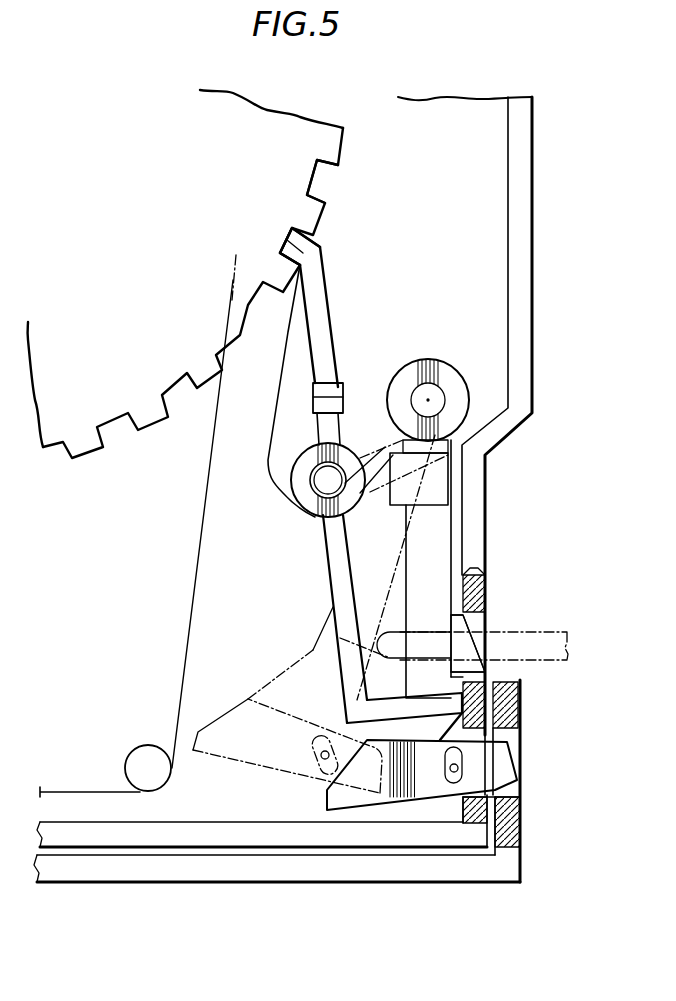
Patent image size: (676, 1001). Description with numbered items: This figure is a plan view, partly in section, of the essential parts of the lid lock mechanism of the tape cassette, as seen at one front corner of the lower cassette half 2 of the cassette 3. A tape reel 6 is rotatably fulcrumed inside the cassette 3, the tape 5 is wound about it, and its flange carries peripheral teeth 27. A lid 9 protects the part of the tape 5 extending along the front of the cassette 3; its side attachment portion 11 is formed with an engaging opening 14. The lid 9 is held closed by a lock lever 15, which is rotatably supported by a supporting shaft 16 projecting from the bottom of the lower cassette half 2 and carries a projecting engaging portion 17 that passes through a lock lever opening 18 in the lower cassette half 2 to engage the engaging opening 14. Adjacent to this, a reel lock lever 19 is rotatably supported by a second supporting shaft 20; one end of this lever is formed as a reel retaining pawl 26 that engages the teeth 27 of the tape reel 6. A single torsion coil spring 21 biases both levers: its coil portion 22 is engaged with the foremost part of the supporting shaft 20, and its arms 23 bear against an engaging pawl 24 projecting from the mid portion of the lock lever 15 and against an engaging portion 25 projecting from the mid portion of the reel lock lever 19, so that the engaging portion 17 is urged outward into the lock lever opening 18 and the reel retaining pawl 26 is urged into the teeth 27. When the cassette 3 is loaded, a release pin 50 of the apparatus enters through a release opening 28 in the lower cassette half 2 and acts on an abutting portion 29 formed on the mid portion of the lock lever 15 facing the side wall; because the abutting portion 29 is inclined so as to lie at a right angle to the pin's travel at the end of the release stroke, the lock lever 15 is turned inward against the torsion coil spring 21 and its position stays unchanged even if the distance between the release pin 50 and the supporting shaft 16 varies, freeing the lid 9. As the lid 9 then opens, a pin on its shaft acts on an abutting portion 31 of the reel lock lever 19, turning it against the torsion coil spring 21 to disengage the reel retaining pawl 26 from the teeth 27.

The lower cassette half 2 is at (352, 845).
The cassette 3 is at (527, 415).
The tape 5 is at (80, 793).
The tape reel 6 is at (240, 112).
The lid 9 is at (452, 870).
The attachment portion 11 is at (520, 842).
The engaging opening 14 is at (513, 795).
The lock lever 15 is at (445, 535).
The supporting shaft 16 is at (440, 390).
The engaging portion 17 is at (503, 755).
The lock lever opening 18 is at (513, 782).
The reel lock lever 19 is at (328, 305).
The supporting shaft 20 is at (313, 500).
The torsion coil spring 21 is at (340, 427).
The coil portion 22 is at (320, 483).
The arm 23 is at (347, 383).
The engaging pawl 24 is at (443, 480).
The engaging portion 25 is at (325, 405).
The reel retaining pawl 26 is at (307, 253).
The teeth 27 is at (315, 192).
The release opening 28 is at (478, 640).
The abutting portion 29 is at (470, 657).
The abutting portion 31 is at (400, 690).
The release pin 50 is at (540, 655).